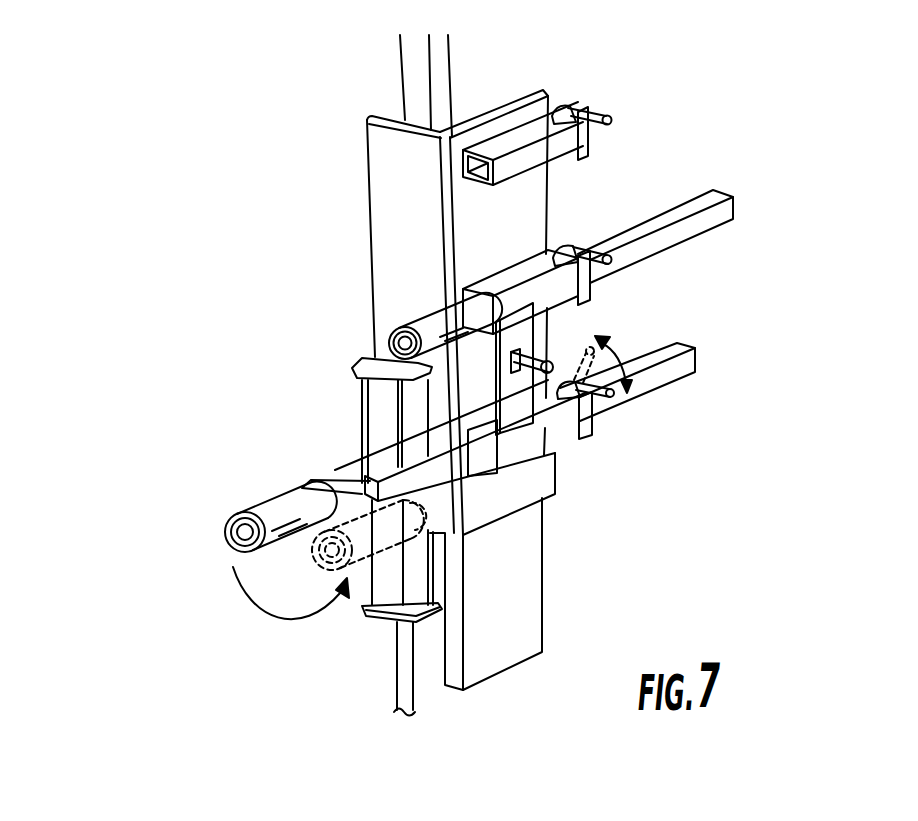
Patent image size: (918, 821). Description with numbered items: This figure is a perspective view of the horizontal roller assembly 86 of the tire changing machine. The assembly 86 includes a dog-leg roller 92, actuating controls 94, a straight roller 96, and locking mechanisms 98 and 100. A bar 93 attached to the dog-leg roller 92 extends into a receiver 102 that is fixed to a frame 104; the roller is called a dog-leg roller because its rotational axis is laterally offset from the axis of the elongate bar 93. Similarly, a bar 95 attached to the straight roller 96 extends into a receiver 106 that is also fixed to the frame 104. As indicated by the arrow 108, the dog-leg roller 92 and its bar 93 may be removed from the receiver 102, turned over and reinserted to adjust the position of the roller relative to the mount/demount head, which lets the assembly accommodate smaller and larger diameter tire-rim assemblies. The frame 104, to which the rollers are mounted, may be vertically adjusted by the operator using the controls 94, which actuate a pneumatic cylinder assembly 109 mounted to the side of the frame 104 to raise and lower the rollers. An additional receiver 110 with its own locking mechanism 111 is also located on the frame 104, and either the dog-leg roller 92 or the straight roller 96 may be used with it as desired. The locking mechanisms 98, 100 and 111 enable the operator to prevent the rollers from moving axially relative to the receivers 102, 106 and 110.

The horizontal roller assembly 86 is at (172, 520).
The dog-leg roller 92 is at (267, 493).
The bar 93 is at (477, 473).
The actuating controls 94 is at (527, 340).
The bar 95 is at (697, 226).
The straight roller 96 is at (422, 310).
The locking mechanism 98 is at (574, 252).
The locking mechanism 100 is at (591, 427).
The receiver 102 is at (557, 443).
The frame 104 is at (600, 157).
The receiver 106 is at (498, 282).
The arrow 108 is at (282, 620).
The pneumatic cylinder assembly 109 is at (378, 453).
The additional receiver 110 is at (521, 130).
The locking mechanism 111 is at (585, 108).